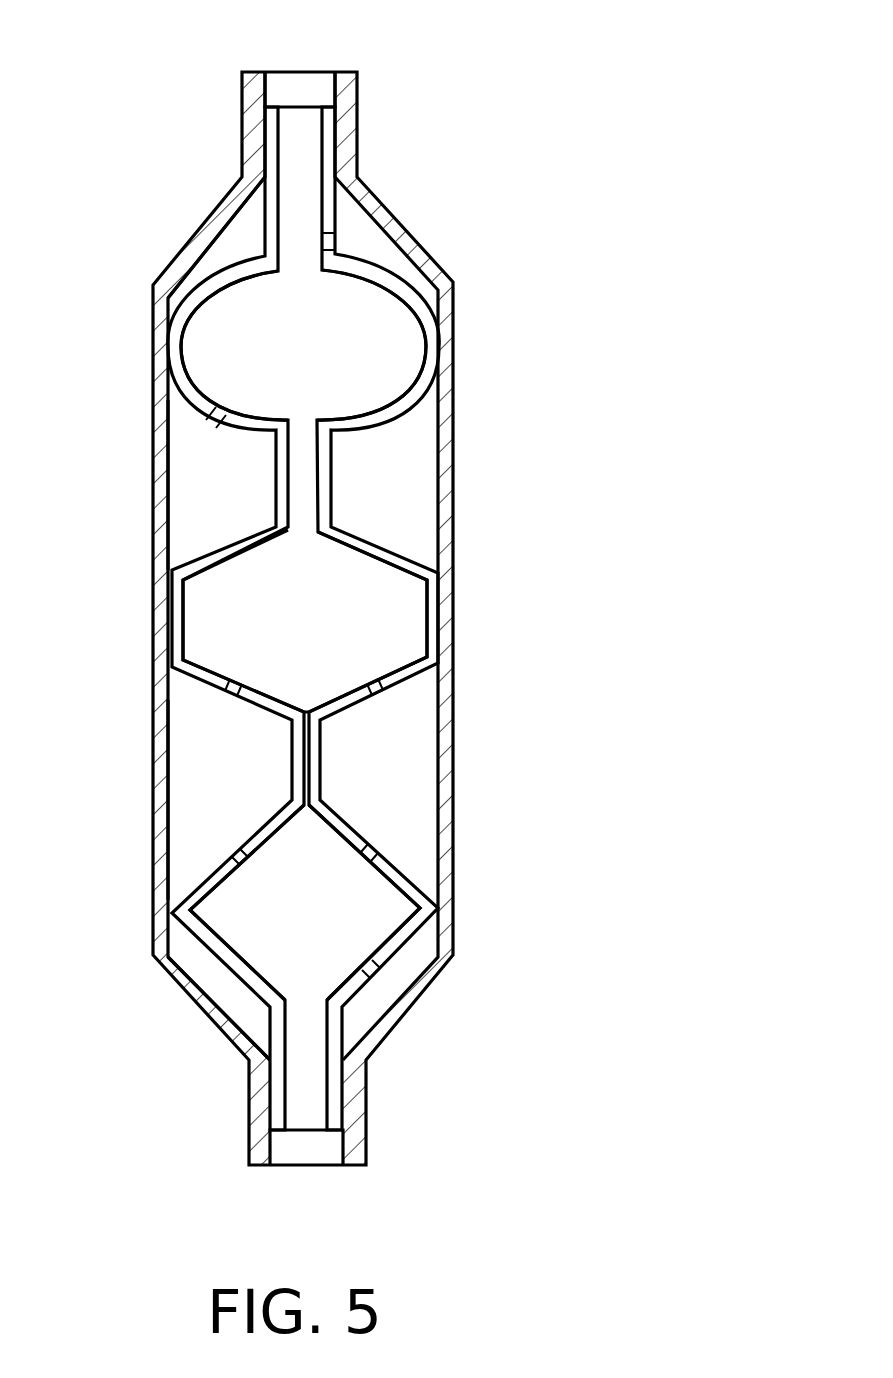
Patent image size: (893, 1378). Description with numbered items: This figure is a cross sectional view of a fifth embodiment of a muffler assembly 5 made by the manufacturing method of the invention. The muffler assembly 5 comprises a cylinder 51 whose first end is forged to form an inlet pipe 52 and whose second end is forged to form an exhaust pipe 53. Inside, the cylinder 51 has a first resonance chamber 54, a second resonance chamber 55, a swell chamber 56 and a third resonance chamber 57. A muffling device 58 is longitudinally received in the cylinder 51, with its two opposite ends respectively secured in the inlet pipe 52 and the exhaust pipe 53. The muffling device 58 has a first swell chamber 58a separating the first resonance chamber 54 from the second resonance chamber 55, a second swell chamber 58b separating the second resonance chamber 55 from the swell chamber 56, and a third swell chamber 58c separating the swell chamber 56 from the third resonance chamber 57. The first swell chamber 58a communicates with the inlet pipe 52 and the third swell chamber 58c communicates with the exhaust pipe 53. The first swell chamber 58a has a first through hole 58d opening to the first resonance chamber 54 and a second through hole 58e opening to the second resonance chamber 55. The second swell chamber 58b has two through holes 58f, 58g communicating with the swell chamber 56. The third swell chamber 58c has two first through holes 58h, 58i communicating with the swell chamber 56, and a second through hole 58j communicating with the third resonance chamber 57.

The muffler assembly 5 is at (130, 577).
The cylinder 51 is at (152, 362).
The inlet pipe 52 is at (297, 100).
The exhaust pipe 53 is at (295, 1143).
The first resonance chamber 54 is at (237, 233).
The second resonance chamber 55 is at (208, 525).
The swell chamber 56 is at (210, 797).
The third resonance chamber 57 is at (225, 988).
The muffling device 58 is at (320, 488).
The first swell chamber 58a is at (357, 342).
The second swell chamber 58b is at (370, 628).
The third swell chamber 58c is at (330, 928).
The first through hole 58d is at (333, 240).
The second through hole 58e is at (207, 420).
The through hole 58f is at (227, 698).
The through hole 58g is at (388, 695).
The first through hole 58h is at (233, 852).
The first through hole 58i is at (370, 848).
The second through hole 58j is at (373, 973).